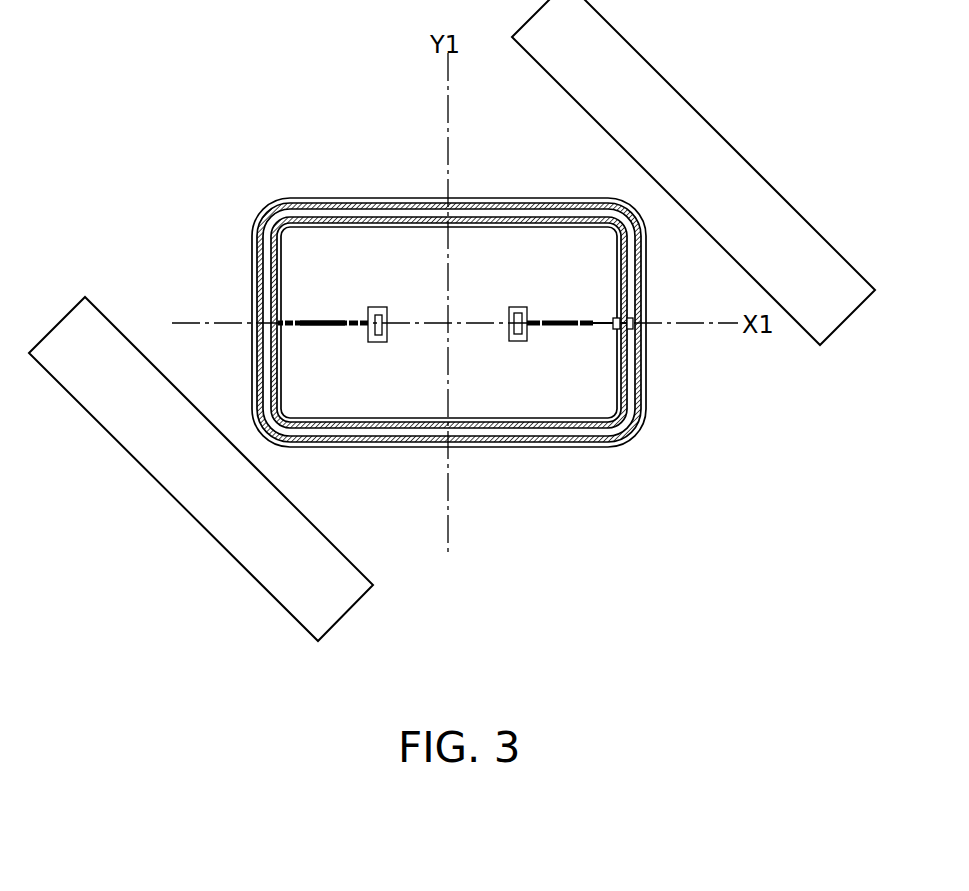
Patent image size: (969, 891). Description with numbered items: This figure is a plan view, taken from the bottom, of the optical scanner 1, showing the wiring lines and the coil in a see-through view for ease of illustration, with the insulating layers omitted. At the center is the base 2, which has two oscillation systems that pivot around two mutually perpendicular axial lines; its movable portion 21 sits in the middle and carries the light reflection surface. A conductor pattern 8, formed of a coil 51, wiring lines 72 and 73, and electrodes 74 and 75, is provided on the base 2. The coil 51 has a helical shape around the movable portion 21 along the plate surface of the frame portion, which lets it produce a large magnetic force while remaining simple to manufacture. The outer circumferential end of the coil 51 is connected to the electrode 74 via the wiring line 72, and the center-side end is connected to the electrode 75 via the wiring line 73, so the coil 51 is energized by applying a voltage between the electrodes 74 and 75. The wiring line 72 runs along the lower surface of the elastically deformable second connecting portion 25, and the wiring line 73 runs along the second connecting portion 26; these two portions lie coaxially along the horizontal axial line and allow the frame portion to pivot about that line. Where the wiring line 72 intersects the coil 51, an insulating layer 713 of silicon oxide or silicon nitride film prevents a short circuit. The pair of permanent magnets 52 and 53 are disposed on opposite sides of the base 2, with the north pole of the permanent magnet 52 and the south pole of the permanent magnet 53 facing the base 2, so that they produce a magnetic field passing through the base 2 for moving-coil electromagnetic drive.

The optical scanner 1 is at (688, 466).
The base 2 is at (615, 450).
The conductor pattern 8 is at (376, 199).
The movable portion 21 is at (408, 316).
The second connecting portion 25 is at (585, 328).
The second connecting portion 26 is at (316, 328).
The coil 51 is at (314, 206).
The permanent magnet 52 is at (752, 184).
The permanent magnet 53 is at (240, 545).
The wiring line 72 is at (560, 328).
The wiring line 73 is at (336, 328).
The electrode 74 is at (518, 341).
The electrode 75 is at (373, 342).
The insulating layer 713 is at (622, 320).